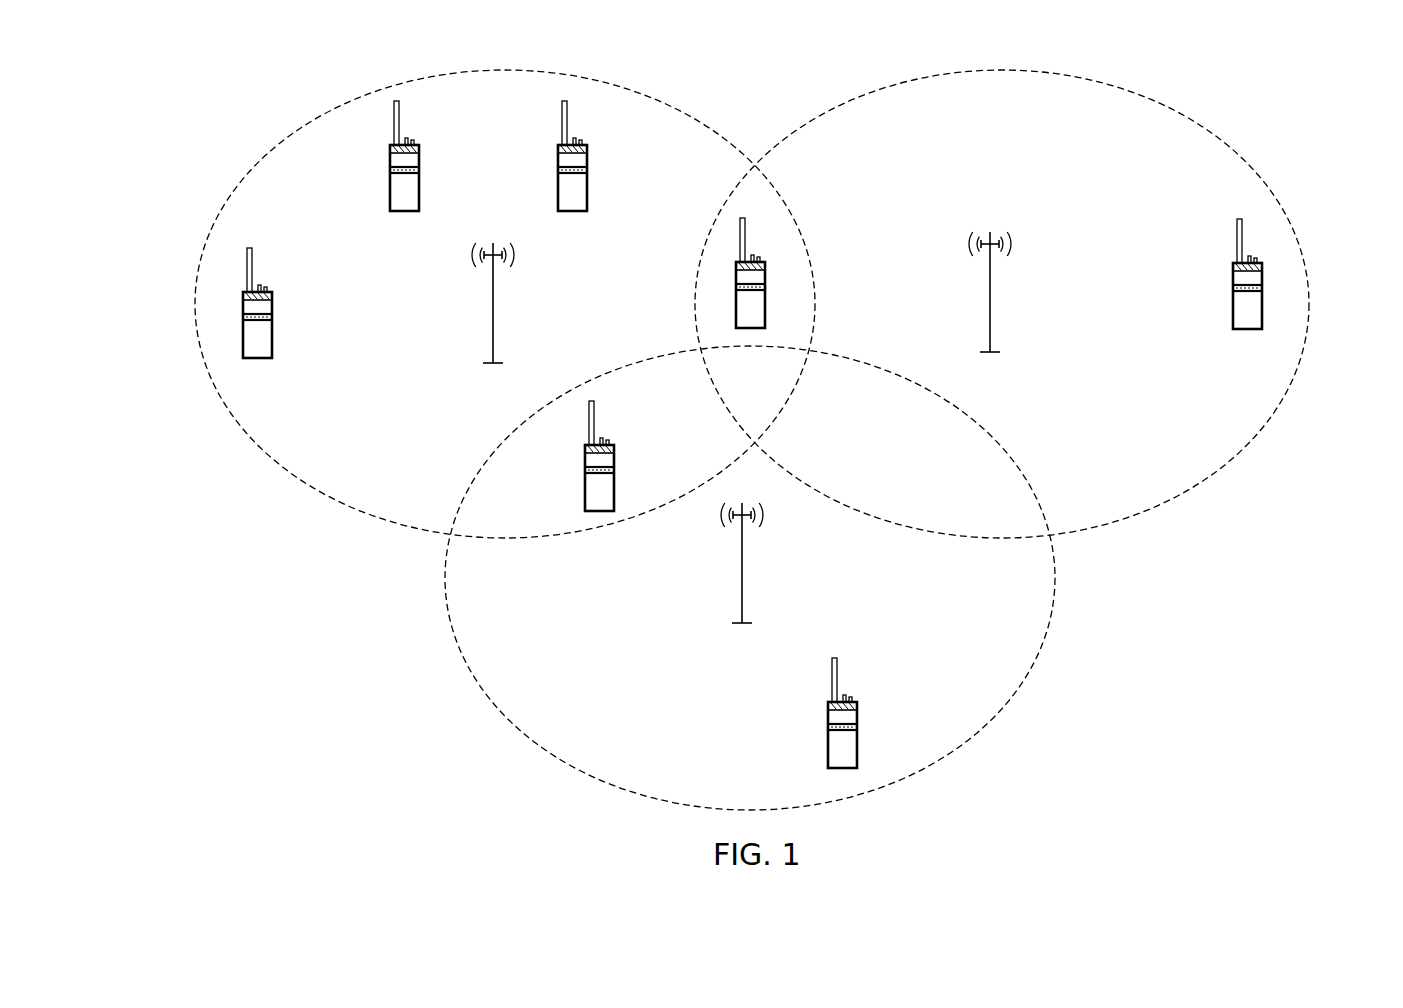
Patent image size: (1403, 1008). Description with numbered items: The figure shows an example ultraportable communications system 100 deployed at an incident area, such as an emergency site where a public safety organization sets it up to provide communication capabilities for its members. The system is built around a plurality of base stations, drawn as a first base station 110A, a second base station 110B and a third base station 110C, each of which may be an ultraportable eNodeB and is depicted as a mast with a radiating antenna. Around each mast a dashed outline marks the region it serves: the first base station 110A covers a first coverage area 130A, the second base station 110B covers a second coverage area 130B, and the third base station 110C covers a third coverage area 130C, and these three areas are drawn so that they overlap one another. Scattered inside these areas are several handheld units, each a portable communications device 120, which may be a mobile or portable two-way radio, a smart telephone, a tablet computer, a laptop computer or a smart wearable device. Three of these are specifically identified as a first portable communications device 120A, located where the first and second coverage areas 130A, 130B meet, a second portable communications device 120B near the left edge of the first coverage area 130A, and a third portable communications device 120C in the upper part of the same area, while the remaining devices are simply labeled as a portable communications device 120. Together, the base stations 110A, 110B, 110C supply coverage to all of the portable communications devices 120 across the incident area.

The ultraportable communications system 100 is at (226, 92).
The first base station 110A is at (493, 325).
The second base station 110B is at (990, 312).
The third base station 110C is at (742, 585).
The portable communications device 120 is at (558, 173).
The first portable communications device 120A is at (736, 289).
The second portable communications device 120B is at (272, 316).
The third portable communications device 120C is at (390, 172).
The first coverage area 130A is at (196, 307).
The second coverage area 130B is at (1308, 305).
The third coverage area 130C is at (445, 578).